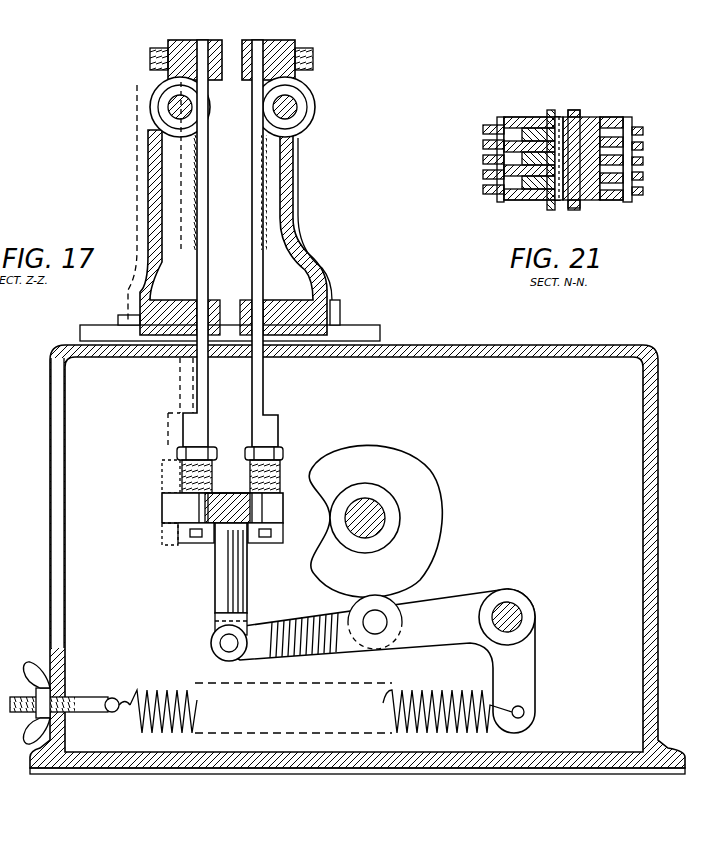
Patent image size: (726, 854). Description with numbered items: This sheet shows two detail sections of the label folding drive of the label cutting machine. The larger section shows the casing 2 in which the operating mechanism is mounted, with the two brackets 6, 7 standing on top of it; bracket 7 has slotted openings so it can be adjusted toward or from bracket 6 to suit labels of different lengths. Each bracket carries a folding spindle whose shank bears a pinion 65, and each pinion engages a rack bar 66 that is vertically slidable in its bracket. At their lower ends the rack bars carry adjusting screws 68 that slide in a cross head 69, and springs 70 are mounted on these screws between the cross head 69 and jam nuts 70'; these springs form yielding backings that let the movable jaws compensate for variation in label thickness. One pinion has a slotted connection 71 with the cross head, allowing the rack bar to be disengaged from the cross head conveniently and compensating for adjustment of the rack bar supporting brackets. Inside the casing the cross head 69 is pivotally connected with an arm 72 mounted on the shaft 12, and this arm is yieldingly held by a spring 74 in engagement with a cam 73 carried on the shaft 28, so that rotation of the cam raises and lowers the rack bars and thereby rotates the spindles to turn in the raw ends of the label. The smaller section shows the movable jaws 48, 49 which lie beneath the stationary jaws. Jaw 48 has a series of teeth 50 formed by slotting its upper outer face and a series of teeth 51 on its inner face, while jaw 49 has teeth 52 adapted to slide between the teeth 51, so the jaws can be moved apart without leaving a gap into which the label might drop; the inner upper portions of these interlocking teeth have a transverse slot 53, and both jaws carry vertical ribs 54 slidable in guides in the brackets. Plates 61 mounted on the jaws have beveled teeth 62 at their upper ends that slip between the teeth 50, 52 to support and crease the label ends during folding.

In FIG. 17, the casing 2 is at (50, 374).
In FIG. 17, the bracket 6 is at (289, 48).
In FIG. 17, the bracket 7 is at (177, 48).
In FIG. 17, the shaft 12 is at (520, 612).
In FIG. 17, the shaft 28 is at (370, 513).
In FIG. 21, the movable jaw 48 is at (597, 202).
In FIG. 21, the movable jaw 49 is at (542, 202).
In FIG. 21, the teeth 50 is at (618, 117).
In FIG. 21, the teeth 51 is at (538, 117).
In FIG. 21, the teeth 52 is at (512, 117).
In FIG. 21, the transverse slot 53 is at (564, 112).
In FIG. 21, the vertical ribs 54 is at (552, 110).
In FIG. 21, the plates 61 is at (497, 120).
In FIG. 21, the beveled teeth 62 is at (483, 190).
In FIG. 17, the pinions 65 is at (160, 107).
In FIG. 17, the rack bars 66 is at (263, 161).
In FIG. 17, the adjusting screws 68 is at (197, 510).
In FIG. 17, the cross head 69 is at (229, 527).
In FIG. 17, the springs 70 is at (207, 476).
In FIG. 17, the jam nuts 70' is at (208, 455).
In FIG. 17, the slotted connection 71 is at (172, 506).
In FIG. 17, the arm 72 is at (447, 604).
In FIG. 17, the cam 73 is at (432, 514).
In FIG. 17, the spring 74 is at (427, 689).